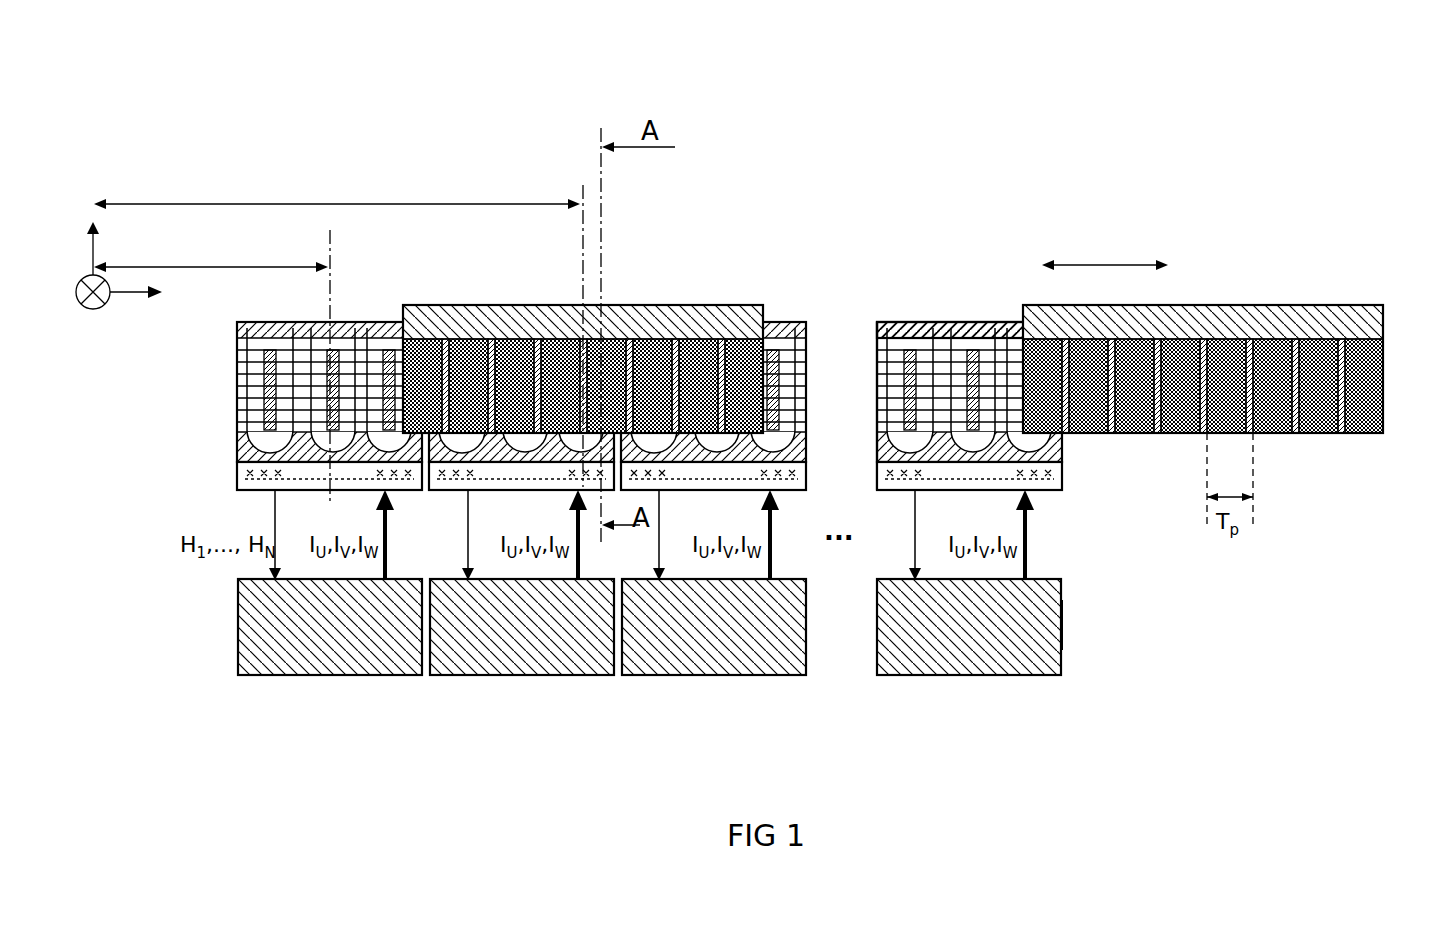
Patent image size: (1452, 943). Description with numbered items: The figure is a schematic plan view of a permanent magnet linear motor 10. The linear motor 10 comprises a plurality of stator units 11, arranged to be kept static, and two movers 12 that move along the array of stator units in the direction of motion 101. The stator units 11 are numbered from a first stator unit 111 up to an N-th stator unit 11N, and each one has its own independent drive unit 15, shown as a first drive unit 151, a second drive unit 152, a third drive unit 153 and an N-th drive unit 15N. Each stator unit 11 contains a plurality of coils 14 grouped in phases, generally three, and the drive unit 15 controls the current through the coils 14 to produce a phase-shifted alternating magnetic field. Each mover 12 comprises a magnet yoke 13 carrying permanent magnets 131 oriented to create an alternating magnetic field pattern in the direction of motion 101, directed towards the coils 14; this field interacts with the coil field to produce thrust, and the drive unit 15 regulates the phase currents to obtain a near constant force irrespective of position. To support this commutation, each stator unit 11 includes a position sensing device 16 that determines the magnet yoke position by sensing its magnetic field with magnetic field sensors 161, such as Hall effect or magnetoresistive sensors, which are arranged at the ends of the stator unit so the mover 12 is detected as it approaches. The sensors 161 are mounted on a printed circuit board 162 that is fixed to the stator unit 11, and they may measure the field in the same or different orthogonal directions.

The linear motor 10 is at (856, 120).
The direction of motion 101 is at (1100, 248).
The stator unit 11 is at (898, 316).
The support 111 is at (237, 372).
The N-th stator unit 11N is at (942, 322).
The mover 12 is at (649, 300).
The magnet yoke 13 is at (1400, 385).
The permanent magnets 131 is at (1313, 434).
The coils 14 is at (866, 330).
The drive unit 15 is at (1062, 627).
The first drive unit 151 is at (282, 675).
The second drive unit 152 is at (505, 675).
The third drive unit 153 is at (697, 675).
The N-th drive unit 15N is at (905, 675).
The position sensing device 16 is at (864, 460).
The magnetic field sensors 161 is at (888, 476).
The printed circuit board 162 is at (1062, 463).